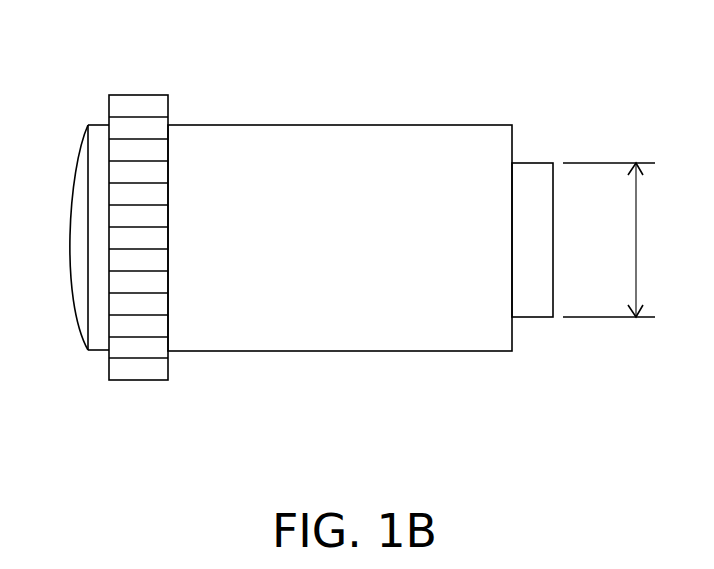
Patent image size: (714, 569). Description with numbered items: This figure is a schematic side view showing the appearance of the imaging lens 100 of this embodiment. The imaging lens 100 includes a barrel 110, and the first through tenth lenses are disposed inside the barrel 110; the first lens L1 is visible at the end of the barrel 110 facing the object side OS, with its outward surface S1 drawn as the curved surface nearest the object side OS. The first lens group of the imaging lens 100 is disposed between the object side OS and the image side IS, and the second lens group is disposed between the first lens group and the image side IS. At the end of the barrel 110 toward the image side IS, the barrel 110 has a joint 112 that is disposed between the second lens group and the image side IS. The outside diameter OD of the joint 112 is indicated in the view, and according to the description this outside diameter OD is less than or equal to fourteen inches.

The imaging lens 100 is at (616, 460).
The barrel 110 is at (327, 125).
The joint 112 is at (543, 289).
The first lens L1 is at (82, 287).
The object-side surface of first lens S1 is at (75, 180).
The object side OS is at (42, 242).
The image side IS is at (572, 239).
The outside diameter OD is at (618, 240).